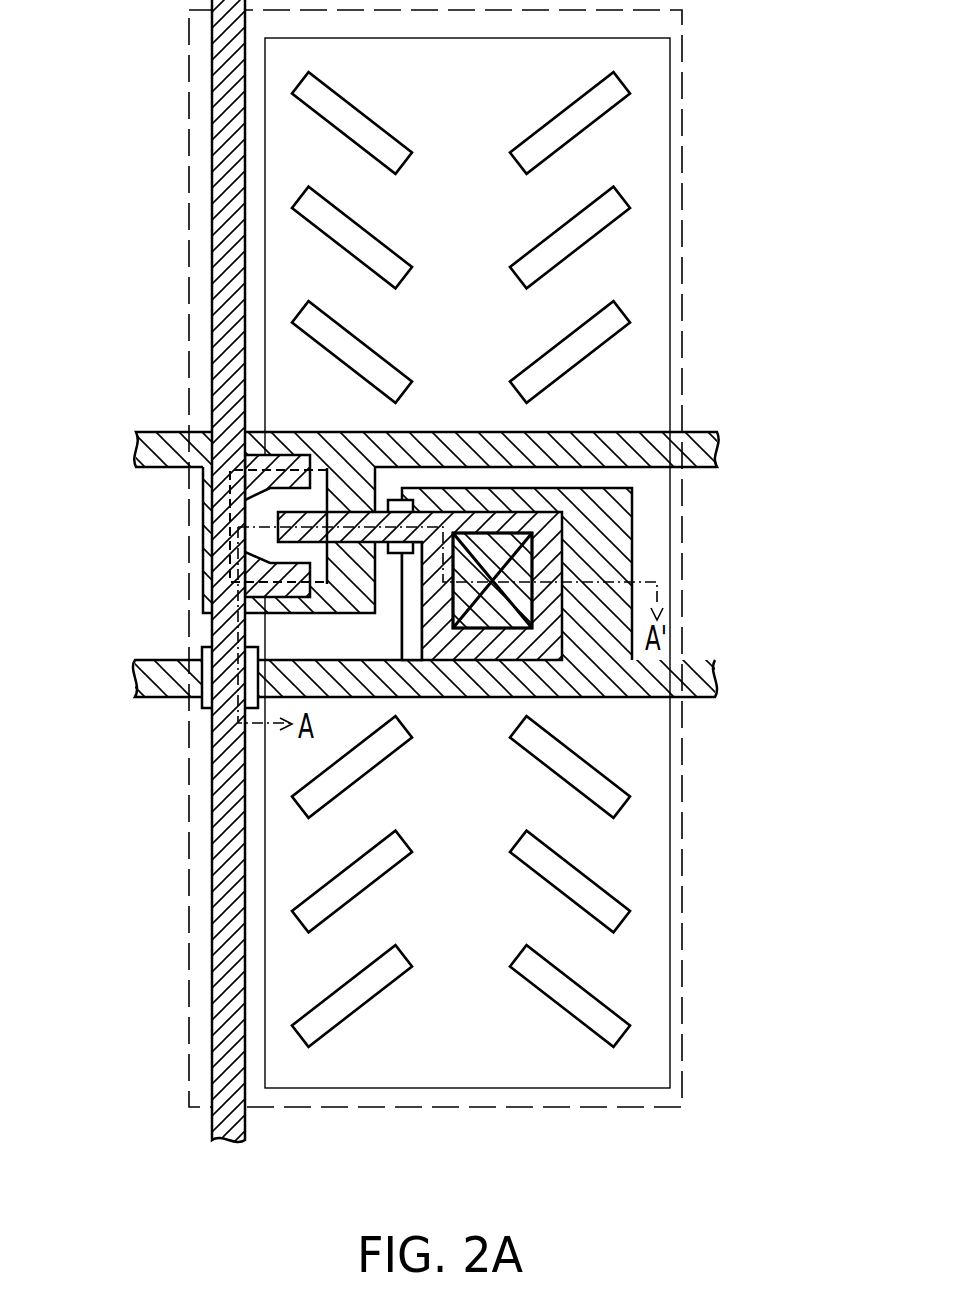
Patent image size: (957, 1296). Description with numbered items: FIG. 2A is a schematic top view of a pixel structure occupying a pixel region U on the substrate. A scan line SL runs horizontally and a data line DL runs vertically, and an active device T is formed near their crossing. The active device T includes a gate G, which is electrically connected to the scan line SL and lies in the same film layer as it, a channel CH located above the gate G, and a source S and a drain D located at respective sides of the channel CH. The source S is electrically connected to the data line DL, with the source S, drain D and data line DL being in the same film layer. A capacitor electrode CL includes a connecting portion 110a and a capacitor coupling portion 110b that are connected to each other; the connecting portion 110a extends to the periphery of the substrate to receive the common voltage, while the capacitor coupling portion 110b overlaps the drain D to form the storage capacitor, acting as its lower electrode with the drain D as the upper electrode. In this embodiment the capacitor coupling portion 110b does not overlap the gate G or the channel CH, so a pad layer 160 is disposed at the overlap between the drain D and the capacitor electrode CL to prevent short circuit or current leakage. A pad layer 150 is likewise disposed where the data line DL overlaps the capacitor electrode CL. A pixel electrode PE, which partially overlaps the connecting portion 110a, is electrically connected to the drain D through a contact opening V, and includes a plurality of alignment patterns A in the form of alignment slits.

The pixel region U is at (682, 72).
The pixel electrode PE is at (670, 290).
The alignment patterns A is at (615, 202).
The scan line SL is at (136, 448).
The active device T is at (233, 540).
The source S is at (278, 462).
The channel CH is at (262, 500).
The drain D is at (278, 515).
The gate G is at (246, 603).
The pad layer 160 is at (393, 500).
The contact opening V is at (567, 542).
The capacitor coupling portion 110b is at (610, 560).
The capacitor electrode CL is at (486, 597).
The connecting portion 110a is at (700, 682).
The pad layer 150 is at (203, 710).
The data line DL is at (212, 790).